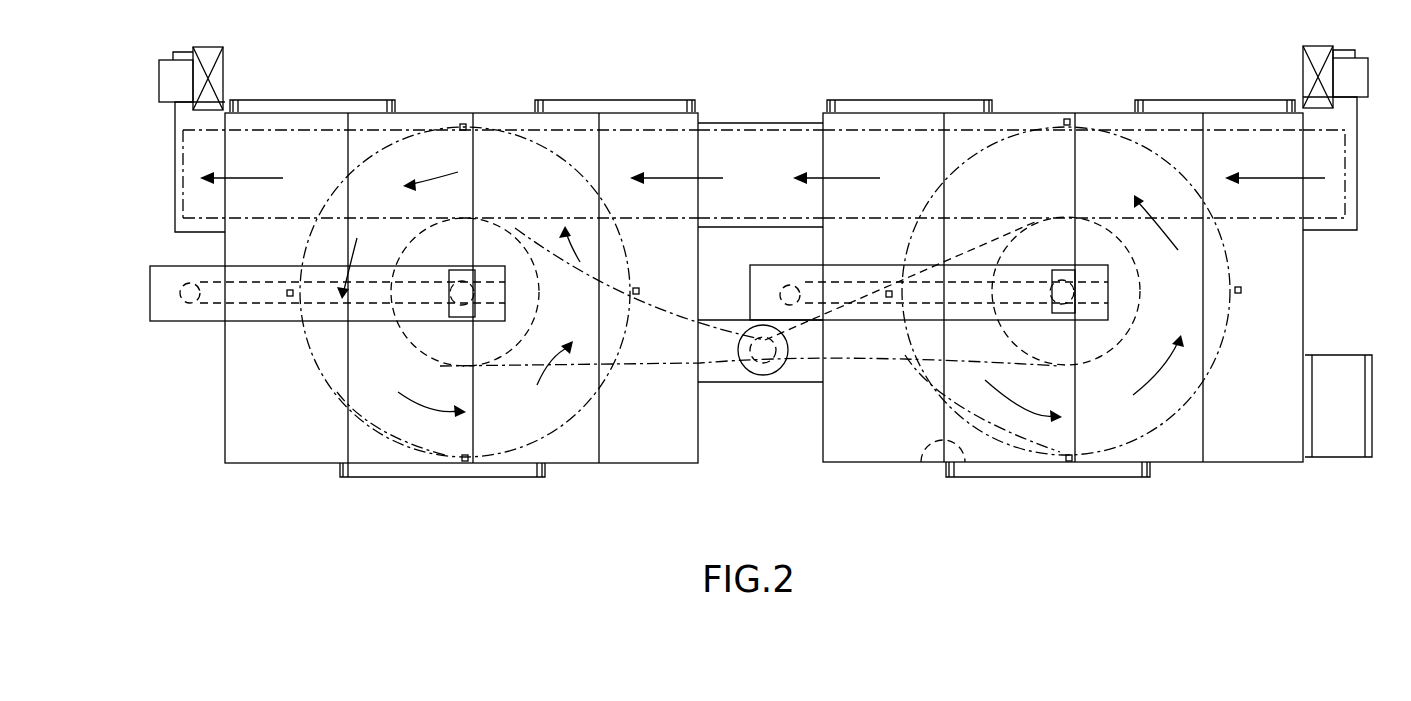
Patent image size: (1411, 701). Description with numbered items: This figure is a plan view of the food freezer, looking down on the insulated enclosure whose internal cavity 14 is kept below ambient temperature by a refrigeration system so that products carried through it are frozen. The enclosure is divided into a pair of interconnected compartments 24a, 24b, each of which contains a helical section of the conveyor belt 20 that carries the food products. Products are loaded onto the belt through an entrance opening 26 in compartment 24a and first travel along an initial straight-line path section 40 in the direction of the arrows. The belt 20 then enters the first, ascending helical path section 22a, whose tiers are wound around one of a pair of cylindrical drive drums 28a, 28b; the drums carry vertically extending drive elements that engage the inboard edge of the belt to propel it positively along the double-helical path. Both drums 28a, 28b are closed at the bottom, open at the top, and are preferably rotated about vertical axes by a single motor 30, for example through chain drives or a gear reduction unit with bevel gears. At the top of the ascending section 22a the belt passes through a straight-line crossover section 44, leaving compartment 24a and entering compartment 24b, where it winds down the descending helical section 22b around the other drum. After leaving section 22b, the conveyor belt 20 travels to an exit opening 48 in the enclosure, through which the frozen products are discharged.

The internal cavity 14 is at (920, 462).
The conveyor belt 20 is at (337, 393).
The first helical path section 22a is at (944, 402).
The descending helical section 22b is at (567, 422).
The compartment 24a is at (1020, 112).
The compartment 24b is at (507, 112).
The entrance opening 26 is at (1325, 152).
The cylindrical drive drum 28a is at (1140, 292).
The cylindrical drive drum 28b is at (415, 240).
The motor 30 is at (748, 374).
The initial straight-line path section 40 is at (1268, 148).
The straight-line crossover section 44 is at (763, 165).
The exit opening 48 is at (175, 180).